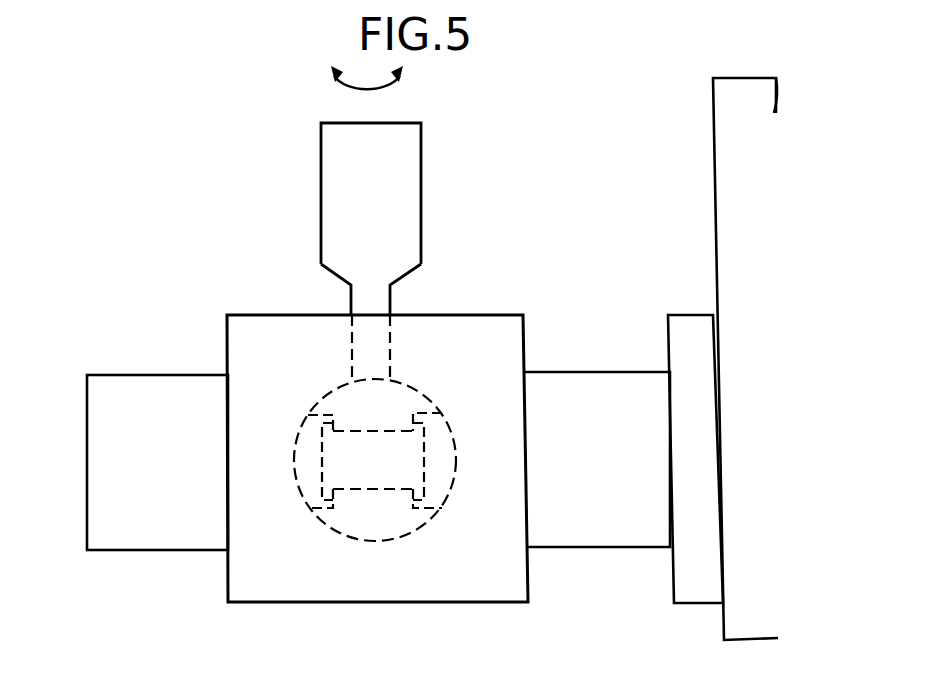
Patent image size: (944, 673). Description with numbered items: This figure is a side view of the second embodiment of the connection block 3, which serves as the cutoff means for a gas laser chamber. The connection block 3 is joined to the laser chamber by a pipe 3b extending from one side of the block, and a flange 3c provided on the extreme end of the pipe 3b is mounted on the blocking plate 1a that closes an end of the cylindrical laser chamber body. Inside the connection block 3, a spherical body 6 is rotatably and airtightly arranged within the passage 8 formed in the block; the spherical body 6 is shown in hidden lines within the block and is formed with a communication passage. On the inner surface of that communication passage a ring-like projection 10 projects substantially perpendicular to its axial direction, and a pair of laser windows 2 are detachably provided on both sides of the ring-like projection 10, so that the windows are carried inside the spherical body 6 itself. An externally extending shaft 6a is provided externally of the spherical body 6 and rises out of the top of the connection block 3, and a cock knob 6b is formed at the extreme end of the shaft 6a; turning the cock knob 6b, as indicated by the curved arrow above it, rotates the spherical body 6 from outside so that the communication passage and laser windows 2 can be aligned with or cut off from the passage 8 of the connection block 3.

The blocking plate 1a is at (733, 153).
The laser window 2 is at (425, 463).
The connection block 3 is at (239, 196).
The pipe 3b is at (597, 527).
The flange 3c is at (698, 497).
The spherical body 6 is at (438, 234).
The shaft 6a is at (380, 303).
The cock knob 6b is at (400, 172).
The passage 8 is at (357, 437).
The ring-like projection 10 is at (377, 507).